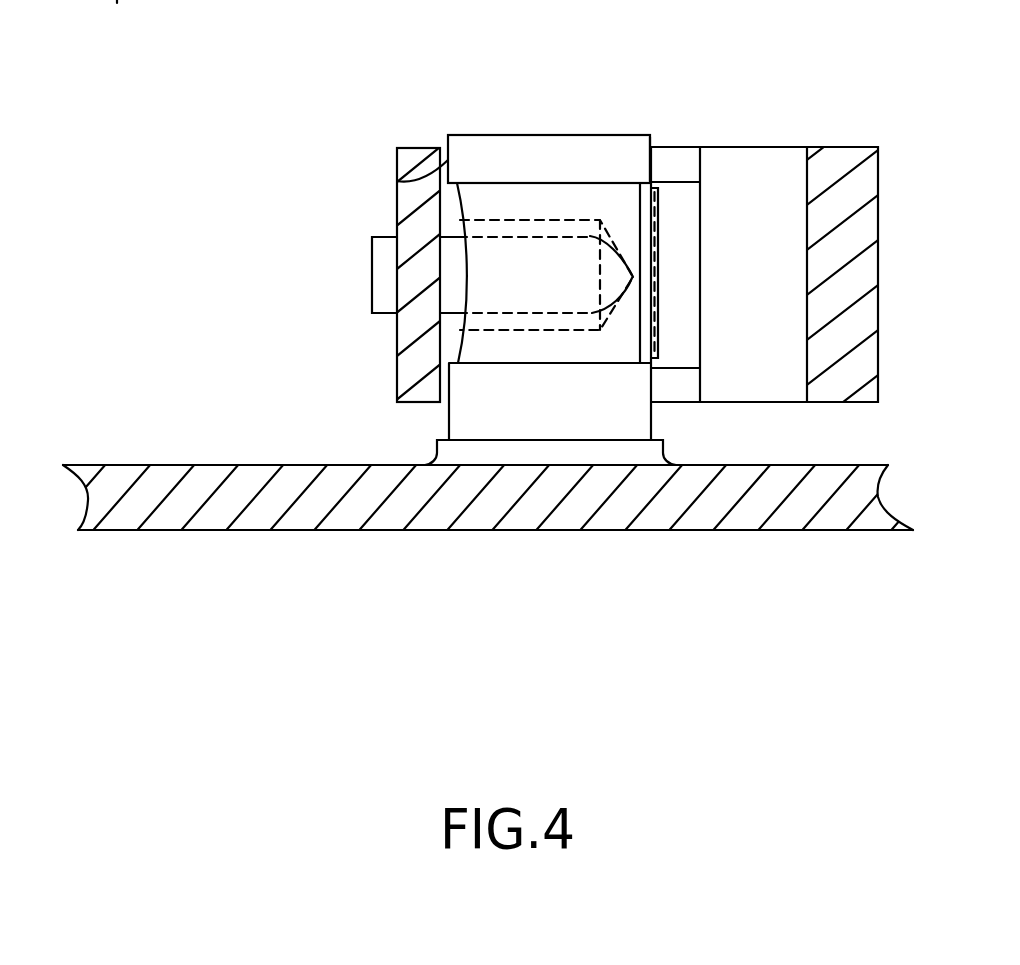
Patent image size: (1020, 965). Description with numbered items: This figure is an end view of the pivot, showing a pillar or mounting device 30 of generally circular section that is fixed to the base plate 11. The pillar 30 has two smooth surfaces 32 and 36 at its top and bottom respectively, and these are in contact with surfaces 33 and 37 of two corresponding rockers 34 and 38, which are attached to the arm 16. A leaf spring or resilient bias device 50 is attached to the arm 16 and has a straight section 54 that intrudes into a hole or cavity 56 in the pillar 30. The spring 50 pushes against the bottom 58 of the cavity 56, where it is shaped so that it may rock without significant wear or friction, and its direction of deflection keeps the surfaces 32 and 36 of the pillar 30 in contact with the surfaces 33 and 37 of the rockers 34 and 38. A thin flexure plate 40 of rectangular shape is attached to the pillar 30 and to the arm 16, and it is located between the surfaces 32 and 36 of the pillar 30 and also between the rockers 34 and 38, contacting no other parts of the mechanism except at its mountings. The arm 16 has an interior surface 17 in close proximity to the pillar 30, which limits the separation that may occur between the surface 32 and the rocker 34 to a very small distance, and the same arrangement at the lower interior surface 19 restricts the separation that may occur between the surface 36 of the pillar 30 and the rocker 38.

The base plate 11 is at (357, 512).
The arm 16 is at (415, 158).
The interior surface 17 is at (397, 181).
The lower interior surface 19 is at (441, 401).
The pillar 30 is at (537, 143).
The smooth surface 32 is at (640, 160).
The surface 33 is at (661, 152).
The rocker 34 is at (668, 162).
The smooth surface 36 is at (640, 392).
The surface 37 is at (652, 382).
The rocker 38 is at (680, 394).
The flexure plate 40 is at (657, 262).
The leaf spring 50 is at (372, 277).
The straight section 54 is at (512, 288).
The cavity 56 is at (516, 320).
The bottom of cavity 58 is at (633, 277).